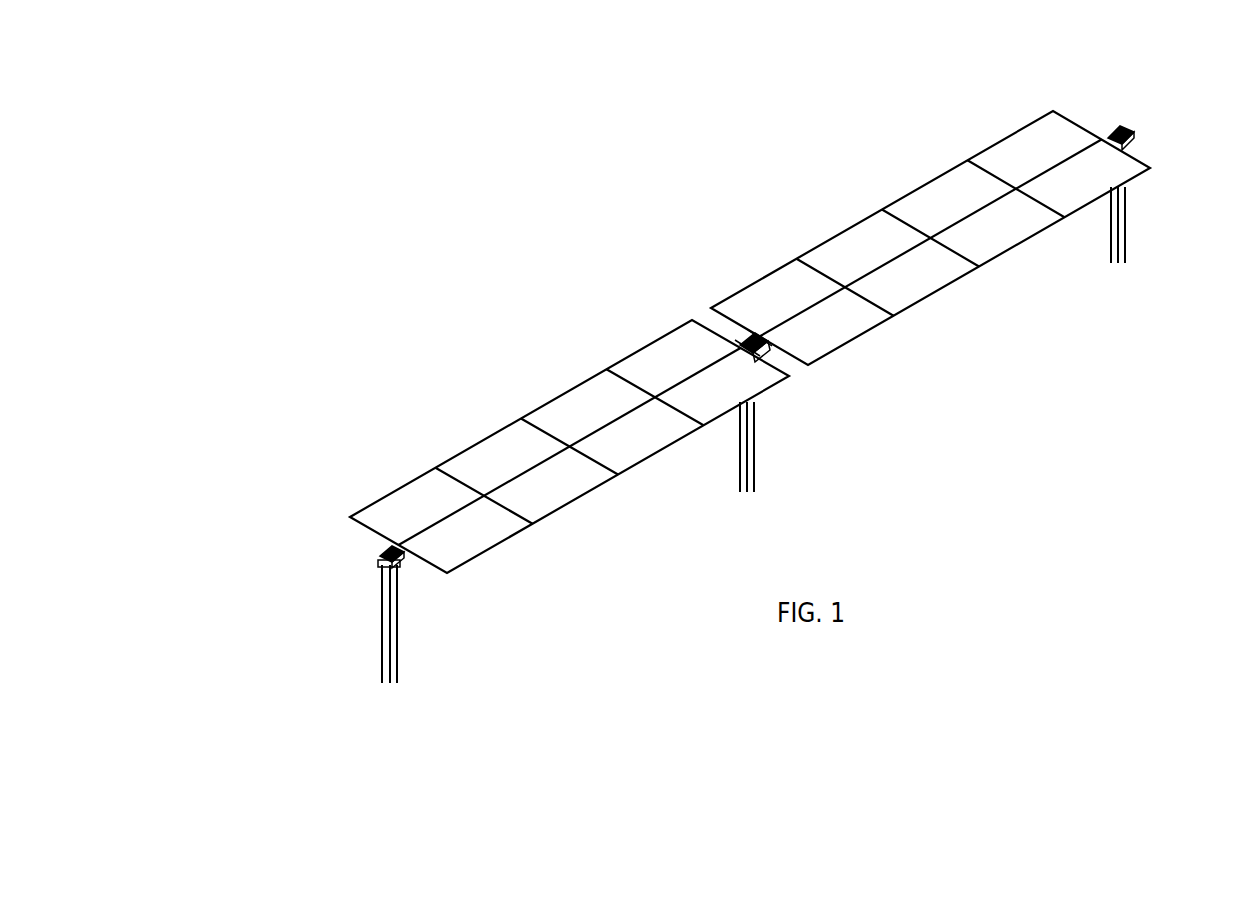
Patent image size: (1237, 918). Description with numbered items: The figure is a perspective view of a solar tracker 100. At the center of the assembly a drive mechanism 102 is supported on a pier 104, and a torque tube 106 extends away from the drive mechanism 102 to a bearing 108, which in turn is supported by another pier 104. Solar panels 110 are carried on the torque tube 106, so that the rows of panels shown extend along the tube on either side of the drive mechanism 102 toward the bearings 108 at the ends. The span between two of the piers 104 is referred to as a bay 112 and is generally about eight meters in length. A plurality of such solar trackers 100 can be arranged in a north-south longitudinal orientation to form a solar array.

The solar tracker 100 is at (204, 127).
The drive mechanism 102 is at (746, 338).
The pier 104 is at (404, 635).
The torque tube 106 is at (369, 564).
The bearing 108 is at (374, 542).
The solar panels 110 is at (853, 246).
The bay 112 is at (992, 346).